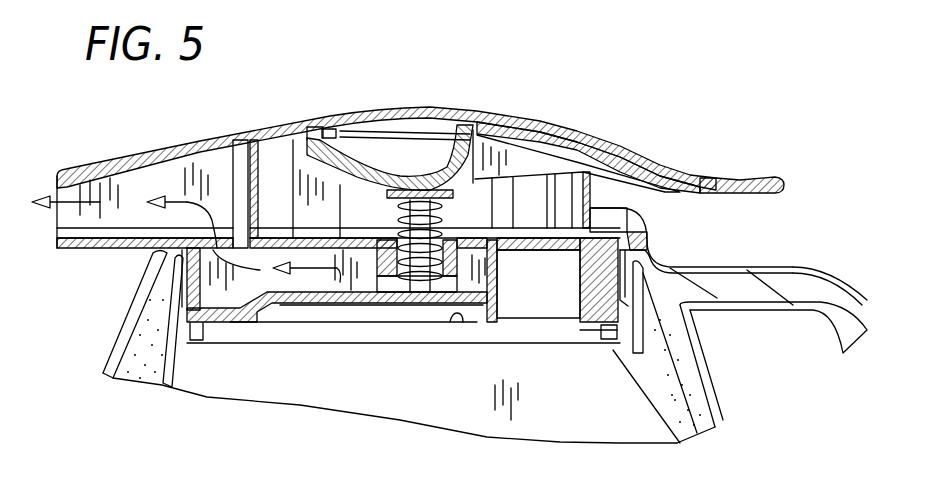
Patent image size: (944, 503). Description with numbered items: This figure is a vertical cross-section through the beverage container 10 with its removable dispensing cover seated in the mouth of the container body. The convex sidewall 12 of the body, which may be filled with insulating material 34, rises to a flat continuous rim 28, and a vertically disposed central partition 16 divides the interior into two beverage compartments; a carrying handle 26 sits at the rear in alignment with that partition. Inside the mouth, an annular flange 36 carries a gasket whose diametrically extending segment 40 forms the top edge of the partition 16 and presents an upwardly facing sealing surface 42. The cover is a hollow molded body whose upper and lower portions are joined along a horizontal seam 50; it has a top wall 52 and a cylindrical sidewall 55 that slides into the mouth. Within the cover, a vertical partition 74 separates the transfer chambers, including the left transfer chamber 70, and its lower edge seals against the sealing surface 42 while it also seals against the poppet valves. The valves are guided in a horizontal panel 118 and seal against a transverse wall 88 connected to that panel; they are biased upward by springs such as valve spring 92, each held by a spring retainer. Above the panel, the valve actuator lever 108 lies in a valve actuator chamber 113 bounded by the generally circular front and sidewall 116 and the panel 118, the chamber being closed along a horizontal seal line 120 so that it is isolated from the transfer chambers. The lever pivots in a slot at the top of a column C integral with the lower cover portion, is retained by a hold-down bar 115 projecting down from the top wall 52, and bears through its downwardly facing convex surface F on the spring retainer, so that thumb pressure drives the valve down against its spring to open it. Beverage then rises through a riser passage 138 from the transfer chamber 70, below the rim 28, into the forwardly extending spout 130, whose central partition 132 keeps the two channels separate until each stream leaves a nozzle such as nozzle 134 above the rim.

The beverage container 10 is at (98, 338).
The convex sidewall 12 is at (105, 363).
The central partition 16 is at (537, 420).
The carrying handle 26 is at (793, 270).
The rim 28 is at (165, 248).
The insulating material 34 is at (133, 373).
The annular flange 36 is at (613, 340).
The diametrically extending segment 40 is at (370, 333).
The upwardly facing sealing surface 42 is at (456, 320).
The horizontal seam 50 is at (643, 223).
The top wall 52 is at (383, 113).
The cylindrical sidewall 55 is at (613, 290).
The left transfer chamber 70 is at (310, 283).
The vertical partition 74 is at (367, 277).
The transverse wall 88 is at (500, 318).
The valve spring 92 is at (365, 158).
The left valve actuator lever 108 is at (743, 177).
The valve actuator chamber 113 is at (352, 180).
The hold-down bar 115 is at (316, 128).
The front and sidewall 116 is at (270, 183).
The horizontal panel 118 is at (367, 263).
The horizontal seal line 120 is at (540, 252).
The spout 130 is at (110, 168).
The central partition 132 is at (203, 167).
The nozzle 134 is at (60, 190).
The riser passage 138 is at (207, 265).
The column C is at (330, 207).
The convex surface F is at (471, 187).